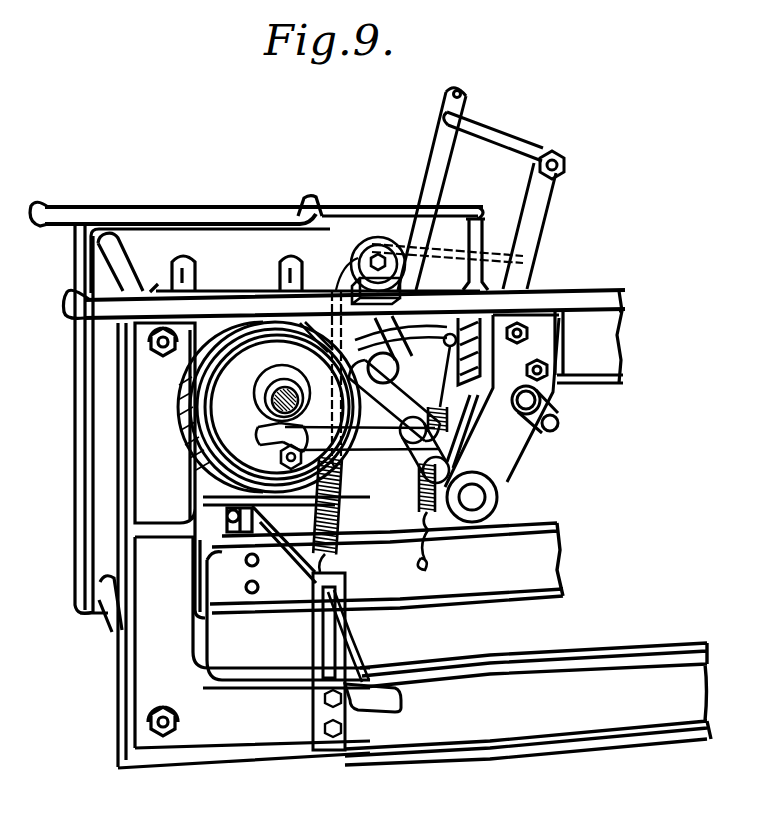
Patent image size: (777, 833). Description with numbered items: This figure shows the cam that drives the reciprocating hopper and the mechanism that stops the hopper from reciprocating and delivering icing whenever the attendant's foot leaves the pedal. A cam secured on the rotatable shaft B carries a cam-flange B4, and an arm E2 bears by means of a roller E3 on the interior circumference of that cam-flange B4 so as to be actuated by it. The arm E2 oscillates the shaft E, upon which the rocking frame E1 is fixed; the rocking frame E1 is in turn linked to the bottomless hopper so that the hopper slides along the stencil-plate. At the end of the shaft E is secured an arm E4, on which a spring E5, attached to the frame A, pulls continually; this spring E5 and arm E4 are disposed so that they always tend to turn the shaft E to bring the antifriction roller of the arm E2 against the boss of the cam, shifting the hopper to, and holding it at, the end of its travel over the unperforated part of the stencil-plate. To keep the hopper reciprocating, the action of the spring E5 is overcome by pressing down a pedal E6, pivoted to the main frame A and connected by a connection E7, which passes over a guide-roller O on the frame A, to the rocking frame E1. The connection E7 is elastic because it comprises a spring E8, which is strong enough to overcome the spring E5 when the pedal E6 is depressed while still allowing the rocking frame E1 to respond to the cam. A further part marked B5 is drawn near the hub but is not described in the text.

The frame A is at (234, 264).
The rotatable shaft B is at (270, 393).
The cam-flange B4 is at (345, 503).
The pin lever B5 is at (262, 406).
The shaft E is at (478, 498).
The rocking frame E1 is at (551, 212).
The arm E2 is at (367, 450).
The roller E3 is at (262, 427).
The arm E4 is at (423, 350).
The spring E5 is at (443, 567).
The pedal E6 is at (403, 698).
The connection E7 is at (296, 353).
The spring E8 is at (340, 522).
The guide-roller O is at (378, 240).